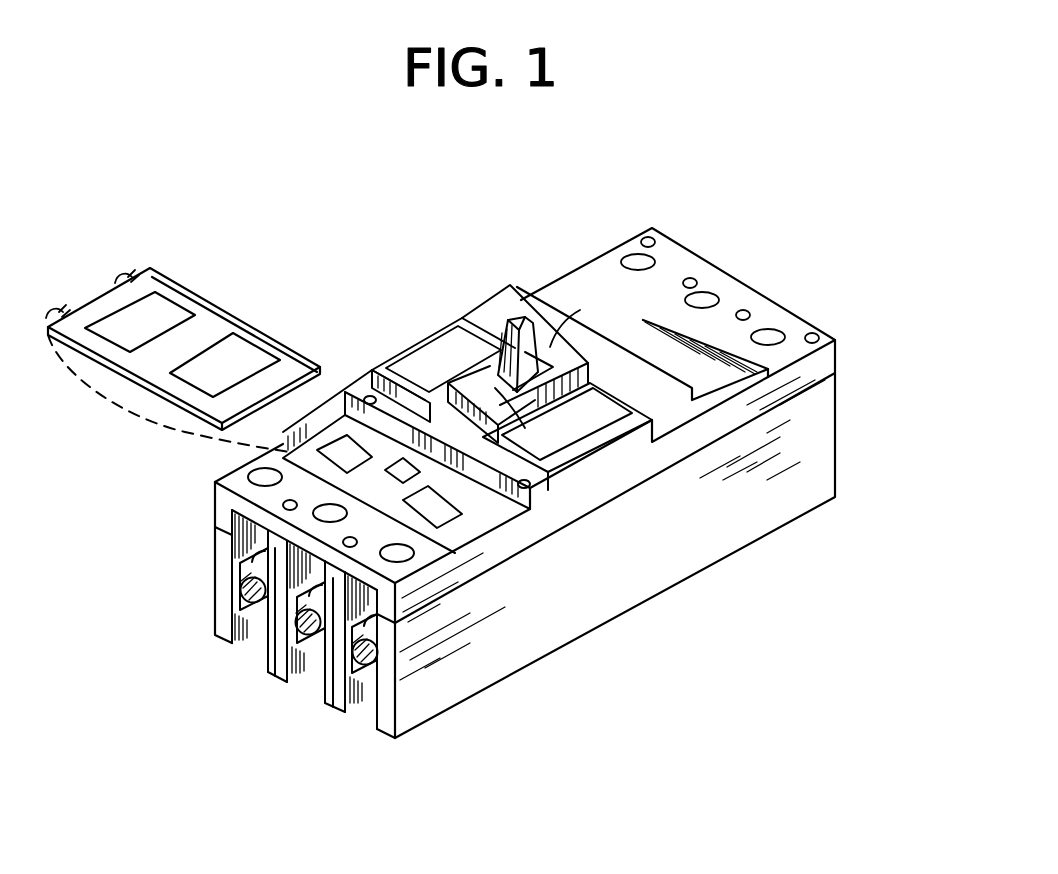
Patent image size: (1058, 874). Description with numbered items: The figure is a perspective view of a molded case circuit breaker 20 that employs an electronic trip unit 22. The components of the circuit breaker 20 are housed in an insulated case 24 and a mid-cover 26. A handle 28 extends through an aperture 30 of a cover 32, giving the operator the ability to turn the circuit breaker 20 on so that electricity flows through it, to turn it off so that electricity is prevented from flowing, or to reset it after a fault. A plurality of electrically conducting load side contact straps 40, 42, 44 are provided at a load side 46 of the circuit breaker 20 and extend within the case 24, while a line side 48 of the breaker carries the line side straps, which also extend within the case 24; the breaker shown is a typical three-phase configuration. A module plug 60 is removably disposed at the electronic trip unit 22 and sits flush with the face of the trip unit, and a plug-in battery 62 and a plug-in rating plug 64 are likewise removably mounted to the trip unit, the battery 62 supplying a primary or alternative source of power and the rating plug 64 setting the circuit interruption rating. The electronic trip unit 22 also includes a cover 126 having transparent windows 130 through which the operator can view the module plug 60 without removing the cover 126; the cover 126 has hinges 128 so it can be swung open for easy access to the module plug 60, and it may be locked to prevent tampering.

The molded case circuit breaker 20 is at (806, 265).
The electronic trip unit 22 is at (341, 452).
The insulated case 24 is at (775, 517).
The mid-cover 26 is at (830, 376).
The handle 28 is at (519, 322).
The aperture 30 is at (493, 352).
The cover 32 is at (580, 274).
The load side contact strap 40 is at (256, 610).
The load side contact strap 42 is at (316, 642).
The load side contact strap 44 is at (373, 673).
The load side 46 is at (430, 698).
The line side 48 is at (820, 475).
The module plug 60 is at (337, 450).
The plug-in battery 62 is at (417, 478).
The plug-in rating plug 64 is at (453, 522).
The cover 126 is at (200, 328).
The hinges 128 is at (120, 276).
The transparent windows 130 is at (150, 307).